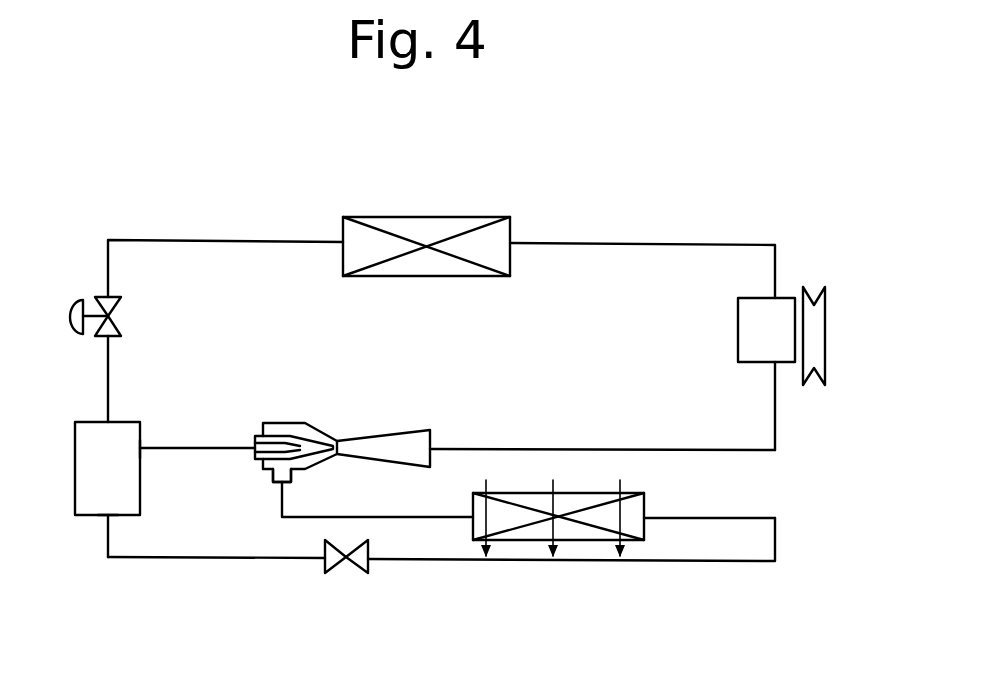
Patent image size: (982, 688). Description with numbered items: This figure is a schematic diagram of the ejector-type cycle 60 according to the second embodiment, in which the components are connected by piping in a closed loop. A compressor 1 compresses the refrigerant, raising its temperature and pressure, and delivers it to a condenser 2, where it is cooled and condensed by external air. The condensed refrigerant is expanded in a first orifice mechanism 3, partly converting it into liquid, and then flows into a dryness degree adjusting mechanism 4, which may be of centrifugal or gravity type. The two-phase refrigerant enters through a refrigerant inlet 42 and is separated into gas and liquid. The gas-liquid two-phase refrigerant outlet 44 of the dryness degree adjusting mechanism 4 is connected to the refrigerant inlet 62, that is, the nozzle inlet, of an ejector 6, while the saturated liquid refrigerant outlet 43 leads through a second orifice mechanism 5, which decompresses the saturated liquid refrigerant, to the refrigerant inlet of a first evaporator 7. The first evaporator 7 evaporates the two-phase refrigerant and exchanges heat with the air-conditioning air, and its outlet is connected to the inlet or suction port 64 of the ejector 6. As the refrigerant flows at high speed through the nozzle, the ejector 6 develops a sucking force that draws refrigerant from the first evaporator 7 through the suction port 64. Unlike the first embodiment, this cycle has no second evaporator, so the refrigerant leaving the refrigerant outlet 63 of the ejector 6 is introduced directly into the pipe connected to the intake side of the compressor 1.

The ejector-type cycle 60 is at (836, 217).
The compressor 1 is at (782, 310).
The condenser 2 is at (412, 218).
The first orifice mechanism 3 is at (120, 312).
The dryness degree adjusting mechanism 4 is at (117, 465).
The refrigerant inlet 42 is at (107, 420).
The saturated liquid refrigerant outlet 43 is at (103, 520).
The gas-liquid two-phase refrigerant outlet 44 is at (142, 448).
The ejector 6 is at (359, 451).
The refrigerant inlet 62 is at (255, 440).
The refrigerant outlet 63 is at (437, 445).
The inlet (suction port) 64 is at (272, 481).
The first evaporator 7 is at (640, 508).
The second orifice mechanism 5 is at (325, 562).